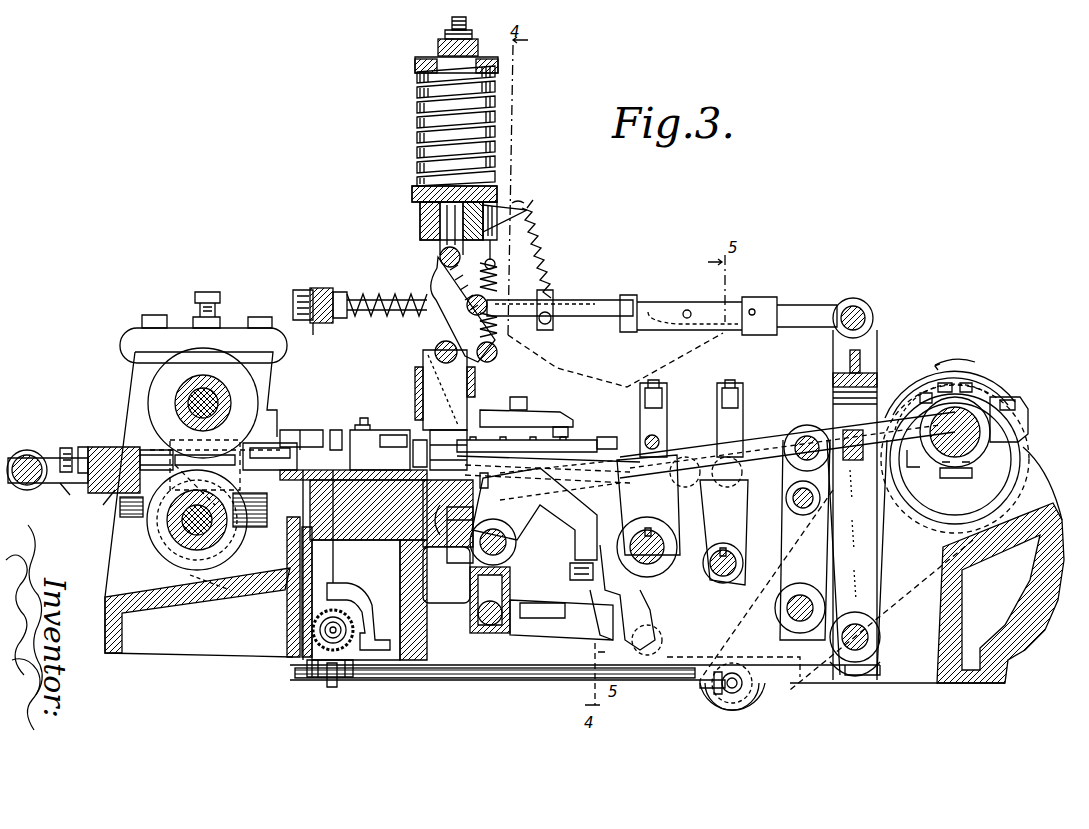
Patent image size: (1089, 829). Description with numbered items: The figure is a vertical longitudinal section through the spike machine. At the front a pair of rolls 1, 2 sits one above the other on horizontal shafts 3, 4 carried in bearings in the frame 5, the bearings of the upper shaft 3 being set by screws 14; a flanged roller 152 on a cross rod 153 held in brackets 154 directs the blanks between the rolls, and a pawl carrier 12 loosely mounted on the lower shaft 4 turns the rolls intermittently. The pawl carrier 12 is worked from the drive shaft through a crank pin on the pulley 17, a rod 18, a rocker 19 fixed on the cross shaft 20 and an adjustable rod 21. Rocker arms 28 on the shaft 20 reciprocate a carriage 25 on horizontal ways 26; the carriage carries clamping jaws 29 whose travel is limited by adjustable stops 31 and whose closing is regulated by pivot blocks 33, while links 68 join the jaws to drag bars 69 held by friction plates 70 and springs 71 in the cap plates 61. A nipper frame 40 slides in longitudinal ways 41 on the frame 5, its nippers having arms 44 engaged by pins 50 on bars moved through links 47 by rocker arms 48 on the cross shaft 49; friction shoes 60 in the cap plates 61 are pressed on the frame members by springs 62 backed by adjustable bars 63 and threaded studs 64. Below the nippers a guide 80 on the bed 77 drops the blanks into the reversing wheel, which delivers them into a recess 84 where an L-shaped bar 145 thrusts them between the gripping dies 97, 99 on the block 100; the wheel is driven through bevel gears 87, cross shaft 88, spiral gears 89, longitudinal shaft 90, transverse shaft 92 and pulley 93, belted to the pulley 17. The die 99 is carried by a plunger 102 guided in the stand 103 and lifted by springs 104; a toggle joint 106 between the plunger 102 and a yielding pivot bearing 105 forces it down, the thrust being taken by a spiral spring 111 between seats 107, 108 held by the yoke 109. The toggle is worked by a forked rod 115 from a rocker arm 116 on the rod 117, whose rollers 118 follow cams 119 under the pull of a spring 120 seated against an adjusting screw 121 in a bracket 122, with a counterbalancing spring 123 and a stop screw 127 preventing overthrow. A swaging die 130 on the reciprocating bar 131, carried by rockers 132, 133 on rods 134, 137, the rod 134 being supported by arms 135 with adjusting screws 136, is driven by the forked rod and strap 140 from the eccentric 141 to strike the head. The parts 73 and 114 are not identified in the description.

The roll 1 is at (163, 388).
The roll 2 is at (150, 530).
The shaft 3 is at (200, 390).
The shaft 4 is at (185, 525).
The frame 5 is at (105, 606).
The pawl carrier 12 is at (257, 506).
The screws 14 is at (221, 280).
The chain wheel or pulley 17 is at (991, 391).
The rod 18 is at (803, 420).
The rocker 19 is at (628, 611).
The cross shaft 20 is at (650, 562).
The adjustable rod 21 is at (565, 643).
The reciprocating carriage 25 is at (100, 447).
The horizontal ways 26 is at (120, 510).
The rocker arms 28 is at (679, 516).
The clamping jaws 29 is at (180, 455).
The adjustable stops 31 is at (152, 450).
The pivot blocks 33 is at (215, 480).
The nipper frame 40 is at (418, 445).
The longitudinal ways 41 is at (570, 505).
The arms 44 is at (392, 435).
The links 47 is at (671, 443).
The rocker arms 48 is at (724, 482).
The cross shaft 49 is at (727, 576).
The pins 50 is at (353, 464).
The friction shoes 60 is at (580, 437).
The cap plates 61 is at (610, 433).
The springs 62 is at (565, 427).
The adjustable bars 63 is at (545, 412).
The threaded studs 64 is at (522, 397).
The links 68 is at (270, 443).
The drag bars 69 is at (298, 430).
The friction plates 70 is at (333, 430).
The springs 71 is at (360, 425).
The bent arm 73 is at (342, 583).
The bed 77 is at (300, 515).
The guide 80 is at (318, 447).
The recess 84 is at (390, 520).
The bevel gears 87 is at (320, 625).
The cross shaft 88 is at (325, 635).
The spiral gears 89 is at (332, 687).
The longitudinal shaft 90 is at (478, 682).
The transverse shaft 92 is at (745, 690).
The chain wheel or pulley 93 is at (722, 712).
The gripping die 97 is at (495, 483).
The gripping die 99 is at (548, 468).
The block 100 is at (452, 525).
The plunger 102 is at (460, 363).
The stand 103 is at (420, 228).
The springs 104 is at (497, 275).
The pivot bearing 105 is at (442, 242).
The toggle joint 106 is at (510, 330).
The spring seat 107 is at (412, 190).
The spring seat 108 is at (415, 63).
The yoke 109 is at (444, 42).
The spiral spring 111 is at (417, 119).
The hub 114 is at (962, 478).
The connecting rod 115 is at (680, 307).
The rocker arm 116 is at (836, 365).
The cross shaft 117 is at (868, 637).
The rollers 118 is at (875, 485).
The cams 119 is at (912, 385).
The spring 120 is at (405, 295).
The adjusting screw 121 is at (320, 288).
The bracket 122 is at (318, 325).
The counterbalancing spring 123 is at (545, 244).
The stop screw 127 is at (287, 300).
The swaging die 130 is at (463, 535).
The die bar 131 is at (560, 498).
The rocker 132 is at (512, 572).
The rocker 133 is at (819, 532).
The cross shaft 134 is at (512, 602).
The arms 135 is at (530, 635).
The adjusting screws 136 is at (572, 563).
The cross shaft 137 is at (785, 618).
The forked rod and strap 140 is at (912, 463).
The crank or eccentric 141 is at (1025, 437).
The L-shaped bar 145 is at (369, 599).
The flanged roller 152 is at (28, 452).
The cross rod 153 is at (27, 490).
The brackets 154 is at (65, 495).